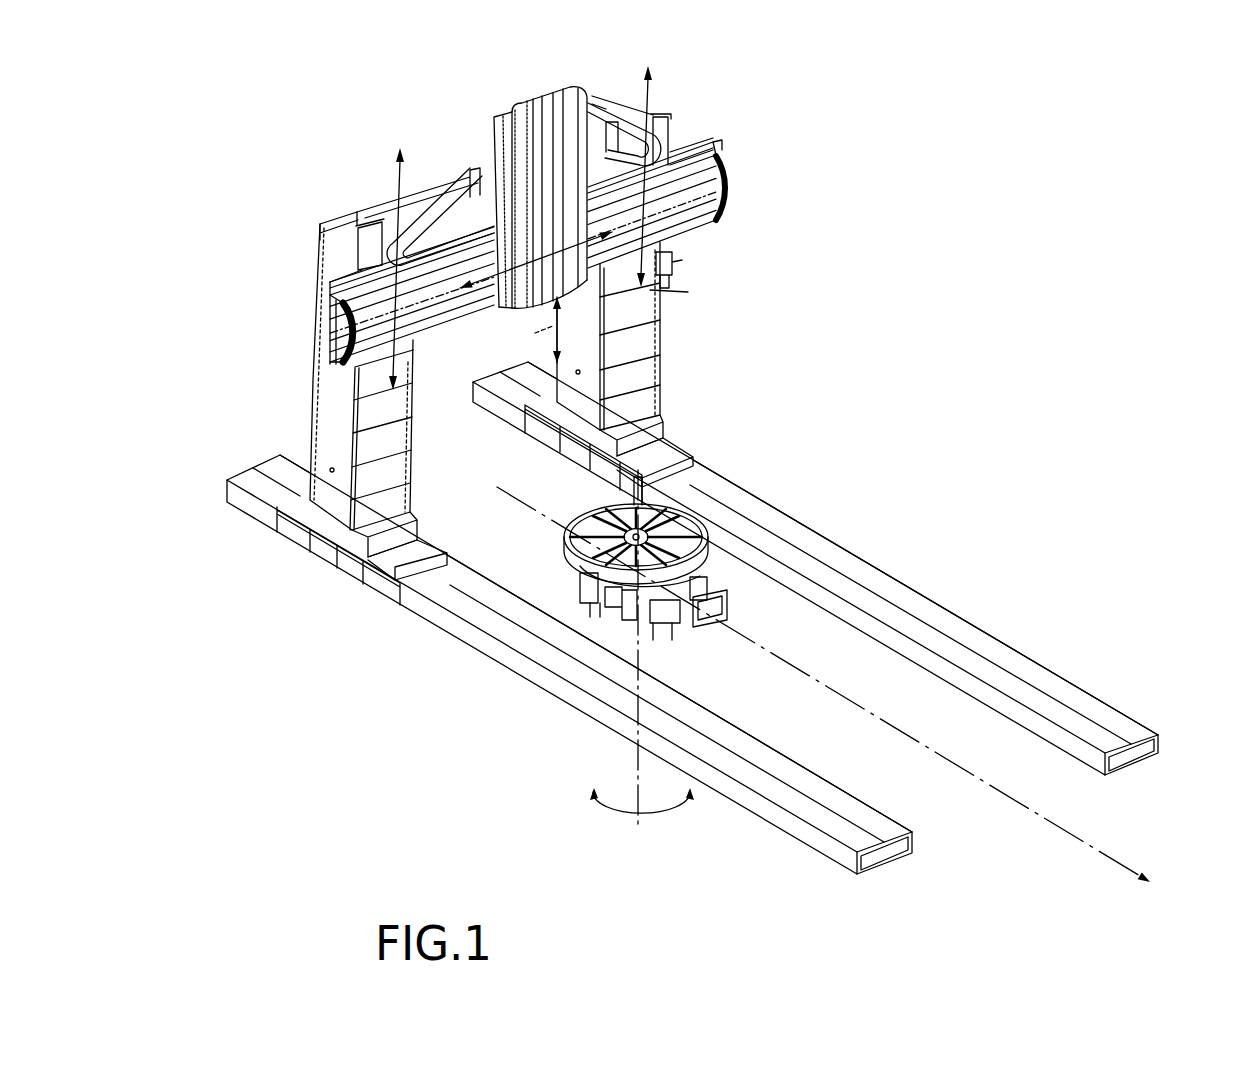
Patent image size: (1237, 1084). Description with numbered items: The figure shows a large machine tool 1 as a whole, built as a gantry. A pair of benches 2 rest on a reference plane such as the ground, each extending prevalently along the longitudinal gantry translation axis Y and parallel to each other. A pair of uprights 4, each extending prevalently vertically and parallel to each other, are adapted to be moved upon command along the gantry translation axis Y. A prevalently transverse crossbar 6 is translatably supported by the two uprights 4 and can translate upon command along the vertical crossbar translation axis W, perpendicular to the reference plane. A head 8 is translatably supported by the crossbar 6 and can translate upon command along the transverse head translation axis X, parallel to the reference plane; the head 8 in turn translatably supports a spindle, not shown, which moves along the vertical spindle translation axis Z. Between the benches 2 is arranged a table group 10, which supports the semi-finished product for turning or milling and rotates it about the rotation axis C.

The machine tool 1 is at (1183, 258).
The benches 2 is at (1000, 630).
The uprights 4 is at (668, 345).
The crossbar 6 is at (732, 182).
The head 8 is at (518, 165).
The table group 10 is at (717, 540).